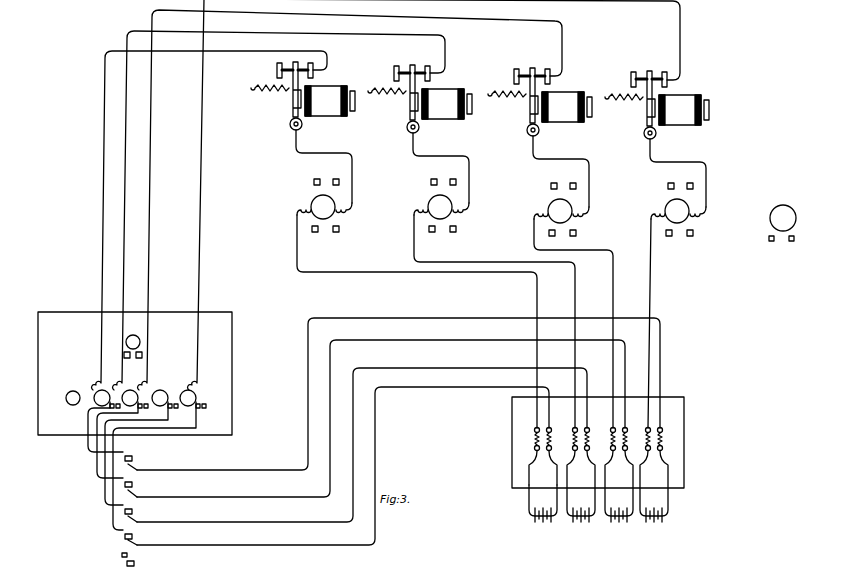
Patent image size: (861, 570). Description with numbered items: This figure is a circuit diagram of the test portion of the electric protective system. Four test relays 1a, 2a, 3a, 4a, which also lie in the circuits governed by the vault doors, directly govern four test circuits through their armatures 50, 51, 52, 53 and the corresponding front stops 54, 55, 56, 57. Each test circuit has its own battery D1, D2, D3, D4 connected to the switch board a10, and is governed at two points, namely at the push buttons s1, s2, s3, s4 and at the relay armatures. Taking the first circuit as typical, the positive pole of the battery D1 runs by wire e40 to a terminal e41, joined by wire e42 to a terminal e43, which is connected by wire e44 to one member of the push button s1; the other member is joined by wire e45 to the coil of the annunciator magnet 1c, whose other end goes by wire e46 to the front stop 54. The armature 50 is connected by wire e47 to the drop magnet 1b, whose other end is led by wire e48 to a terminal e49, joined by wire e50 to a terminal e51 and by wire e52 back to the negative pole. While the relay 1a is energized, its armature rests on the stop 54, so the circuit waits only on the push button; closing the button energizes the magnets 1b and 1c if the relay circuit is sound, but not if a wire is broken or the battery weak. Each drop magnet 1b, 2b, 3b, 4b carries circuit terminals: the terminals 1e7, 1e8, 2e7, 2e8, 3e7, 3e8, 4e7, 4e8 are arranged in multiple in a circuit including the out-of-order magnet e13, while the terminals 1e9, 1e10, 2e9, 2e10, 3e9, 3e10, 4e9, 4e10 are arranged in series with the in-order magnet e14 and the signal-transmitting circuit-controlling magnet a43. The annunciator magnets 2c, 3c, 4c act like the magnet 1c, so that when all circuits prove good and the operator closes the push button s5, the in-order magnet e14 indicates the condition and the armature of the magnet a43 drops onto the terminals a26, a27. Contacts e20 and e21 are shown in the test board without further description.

The wire e46 is at (193, 52).
The wire e47 is at (296, 148).
The wire e48 is at (347, 273).
The wire e44 is at (461, 389).
The wire e45 is at (85, 452).
The front stop 54 is at (328, 58).
The front stop 55 is at (443, 60).
The front stop 56 is at (553, 70).
The front stop 57 is at (668, 73).
The armature 50 is at (293, 104).
The armature 51 is at (410, 109).
The armature 52 is at (530, 112).
The armature 53 is at (647, 114).
The test relay 1a is at (330, 101).
The test relay 2a is at (447, 104).
The test relay 3a is at (567, 107).
The test relay 4a is at (684, 110).
The drop magnet 1b is at (324, 207).
The drop magnet 2b is at (441, 207).
The drop magnet 3b is at (561, 211).
The drop magnet 4b is at (678, 211).
The circuit terminal 1e8 is at (314, 179).
The circuit terminal 1e7 is at (336, 179).
The circuit terminal 1e10 is at (314, 232).
The circuit terminal 1e9 is at (336, 232).
The circuit terminal 2e8 is at (431, 179).
The circuit terminal 2e7 is at (453, 179).
The circuit terminal 2e10 is at (431, 232).
The circuit terminal 2e9 is at (453, 232).
The circuit terminal 3e8 is at (551, 183).
The circuit terminal 3e7 is at (573, 183).
The circuit terminal 3e10 is at (549, 236).
The circuit terminal 3e9 is at (577, 234).
The circuit terminal 4e8 is at (668, 183).
The circuit terminal 4e7 is at (690, 183).
The circuit terminal 4e10 is at (668, 236).
The circuit terminal 4e9 is at (690, 236).
The signal-transmitting circuit-controlling magnet a43 is at (791, 212).
The circuit terminal a27 is at (770, 243).
The circuit terminal a26 is at (793, 243).
The out of order magnet e13 is at (137, 336).
The contact e21 is at (116, 350).
The contact e20 is at (143, 355).
The in order magnet e14 is at (67, 393).
The annunciator magnet 1c is at (107, 392).
The annunciator magnet 2c is at (135, 392).
The annunciator magnet 3c is at (165, 392).
The annunciator magnet 4c is at (195, 392).
The push button s1 is at (392, 394).
The push button s2 is at (375, 418).
The push button s3 is at (356, 445).
The push button s4 is at (139, 537).
The push button s5 is at (137, 561).
The switch board a10 is at (686, 471).
The terminal e49 is at (534, 430).
The wire e50 is at (535, 440).
The terminal e51 is at (534, 449).
The wire e52 is at (512, 480).
The terminal e43 is at (551, 428).
The wire e42 is at (552, 440).
The terminal e41 is at (552, 449).
The wire e40 is at (556, 509).
The battery D1 is at (542, 518).
The battery D2 is at (580, 490).
The battery D3 is at (618, 490).
The battery D4 is at (654, 490).